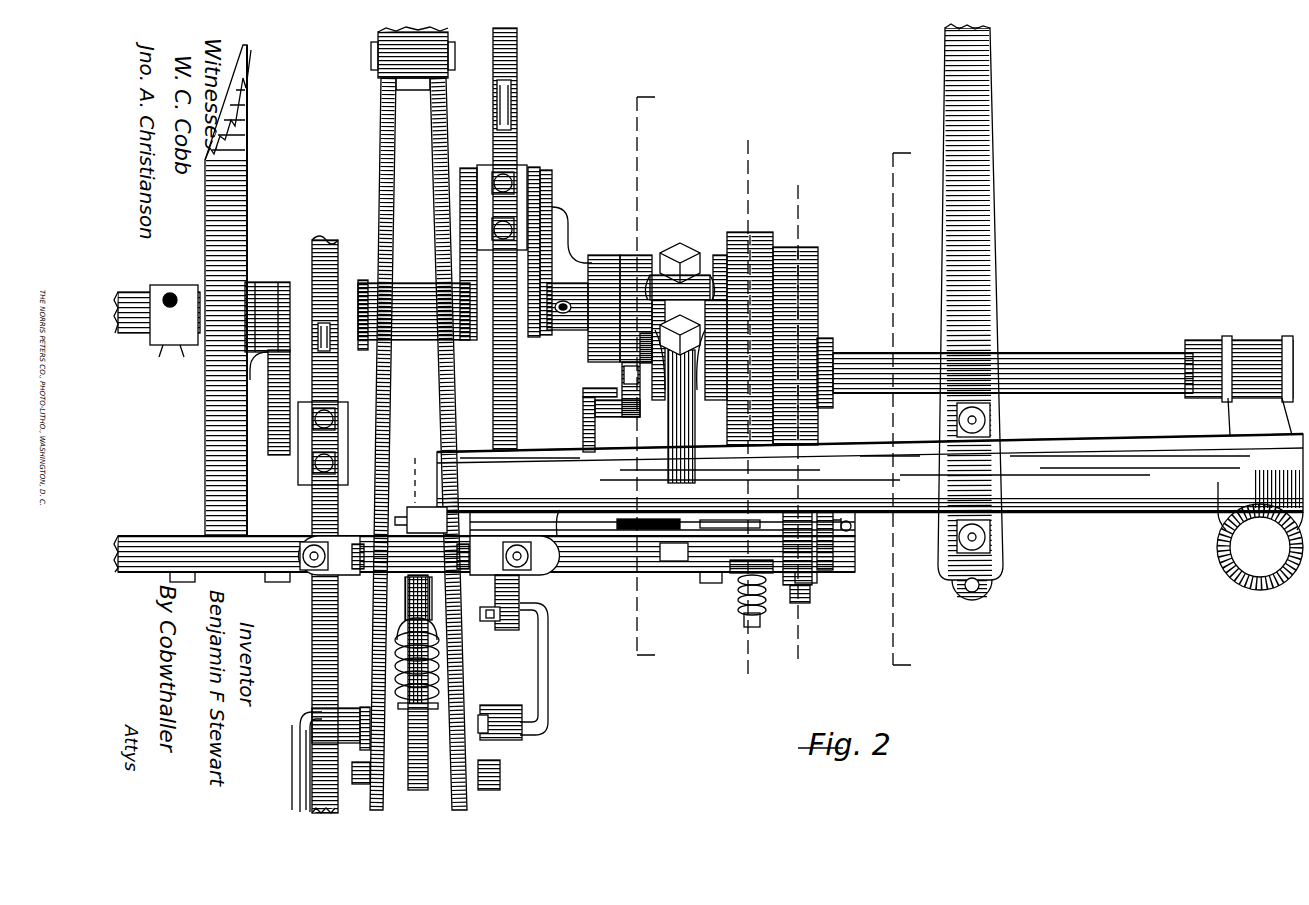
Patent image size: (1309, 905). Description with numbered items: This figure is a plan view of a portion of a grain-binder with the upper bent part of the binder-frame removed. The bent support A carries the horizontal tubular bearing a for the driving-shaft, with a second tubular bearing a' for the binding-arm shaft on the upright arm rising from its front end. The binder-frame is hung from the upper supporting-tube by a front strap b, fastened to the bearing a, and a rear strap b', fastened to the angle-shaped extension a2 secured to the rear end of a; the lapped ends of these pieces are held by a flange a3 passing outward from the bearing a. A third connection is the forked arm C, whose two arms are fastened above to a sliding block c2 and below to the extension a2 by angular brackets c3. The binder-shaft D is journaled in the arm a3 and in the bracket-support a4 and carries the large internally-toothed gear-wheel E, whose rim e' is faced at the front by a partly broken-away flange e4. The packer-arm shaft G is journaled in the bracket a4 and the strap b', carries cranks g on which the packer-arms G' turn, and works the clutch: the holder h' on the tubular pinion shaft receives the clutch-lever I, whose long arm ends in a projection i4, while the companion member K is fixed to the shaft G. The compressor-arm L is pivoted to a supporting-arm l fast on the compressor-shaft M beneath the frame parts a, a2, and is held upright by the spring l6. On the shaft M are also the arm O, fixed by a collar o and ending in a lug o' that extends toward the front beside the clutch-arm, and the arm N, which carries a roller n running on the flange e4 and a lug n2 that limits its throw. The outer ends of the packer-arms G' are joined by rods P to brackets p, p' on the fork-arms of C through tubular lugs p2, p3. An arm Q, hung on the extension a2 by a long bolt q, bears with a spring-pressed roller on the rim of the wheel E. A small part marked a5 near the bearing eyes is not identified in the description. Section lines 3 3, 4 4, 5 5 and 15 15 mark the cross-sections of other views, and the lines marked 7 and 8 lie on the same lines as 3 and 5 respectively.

The angular extension a2 is at (158, 539).
The horizontal tubular bearing a is at (870, 485).
The bent support A is at (1215, 556).
The front connecting strap b is at (976, 312).
The binder-shaft D is at (1078, 350).
The flange a3 is at (1244, 340).
The flange e4 is at (820, 270).
The binder gear-wheel E is at (743, 321).
The rim e' is at (793, 322).
The bracket-support a4 is at (682, 300).
The clutch receiver and holder h' is at (641, 291).
The clutch member K is at (600, 255).
The tubular collar o is at (567, 306).
The lug o' is at (601, 389).
The arm O is at (583, 425).
The clutch-lever I is at (631, 389).
The projection i4 is at (625, 389).
The cranks g is at (551, 202).
The packer-arms G' is at (398, 420).
The packer-arm shaft G is at (157, 306).
The rear connecting strap b' is at (240, 290).
The block c2 is at (390, 62).
The forked arm C is at (440, 368).
The angular brackets c3 is at (363, 540).
The bracket a5 is at (535, 522).
The supporting-arm l is at (406, 509).
The bolt q is at (415, 624).
The compressor-arm L is at (422, 610).
The spring l6 is at (448, 680).
The tubular bearing a' is at (511, 602).
The connecting-rods P is at (547, 680).
The tubular lug p2 is at (515, 744).
The bracket p is at (502, 786).
The tubular lug p3 is at (312, 723).
The bracket p' is at (313, 763).
The arm N is at (833, 562).
The lug n2 is at (828, 513).
The roller n is at (796, 603).
The compressor-shaft M is at (856, 524).
The arm Q is at (737, 597).
The section line 8 8 is at (618, 77).
The section line 5 5 is at (635, 142).
The section line 4 4 is at (790, 117).
The section line 15 15 is at (811, 652).
The section line 3 3 is at (892, 190).
The section line 7 7 is at (868, 129).